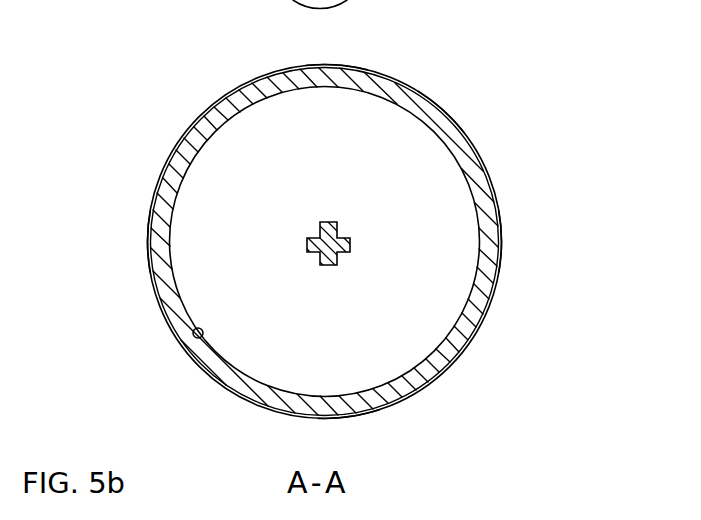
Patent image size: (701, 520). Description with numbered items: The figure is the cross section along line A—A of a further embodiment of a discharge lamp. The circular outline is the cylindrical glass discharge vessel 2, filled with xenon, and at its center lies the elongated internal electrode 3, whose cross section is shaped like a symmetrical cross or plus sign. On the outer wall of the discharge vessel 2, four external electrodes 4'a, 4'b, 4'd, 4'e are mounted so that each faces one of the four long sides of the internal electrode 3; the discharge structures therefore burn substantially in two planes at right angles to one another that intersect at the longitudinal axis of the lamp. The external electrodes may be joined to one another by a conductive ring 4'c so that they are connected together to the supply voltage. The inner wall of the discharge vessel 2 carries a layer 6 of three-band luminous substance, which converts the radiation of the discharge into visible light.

The discharge vessel 2 is at (275, 152).
The internal electrode 3 is at (342, 235).
The external electrode 4'a is at (405, 43).
The external electrode 4'b is at (410, 431).
The ring segment c 4'c is at (497, 100).
The external electrode 4'd is at (562, 241).
The external electrode 4'e is at (94, 241).
The layer of luminous substance 6 is at (203, 338).